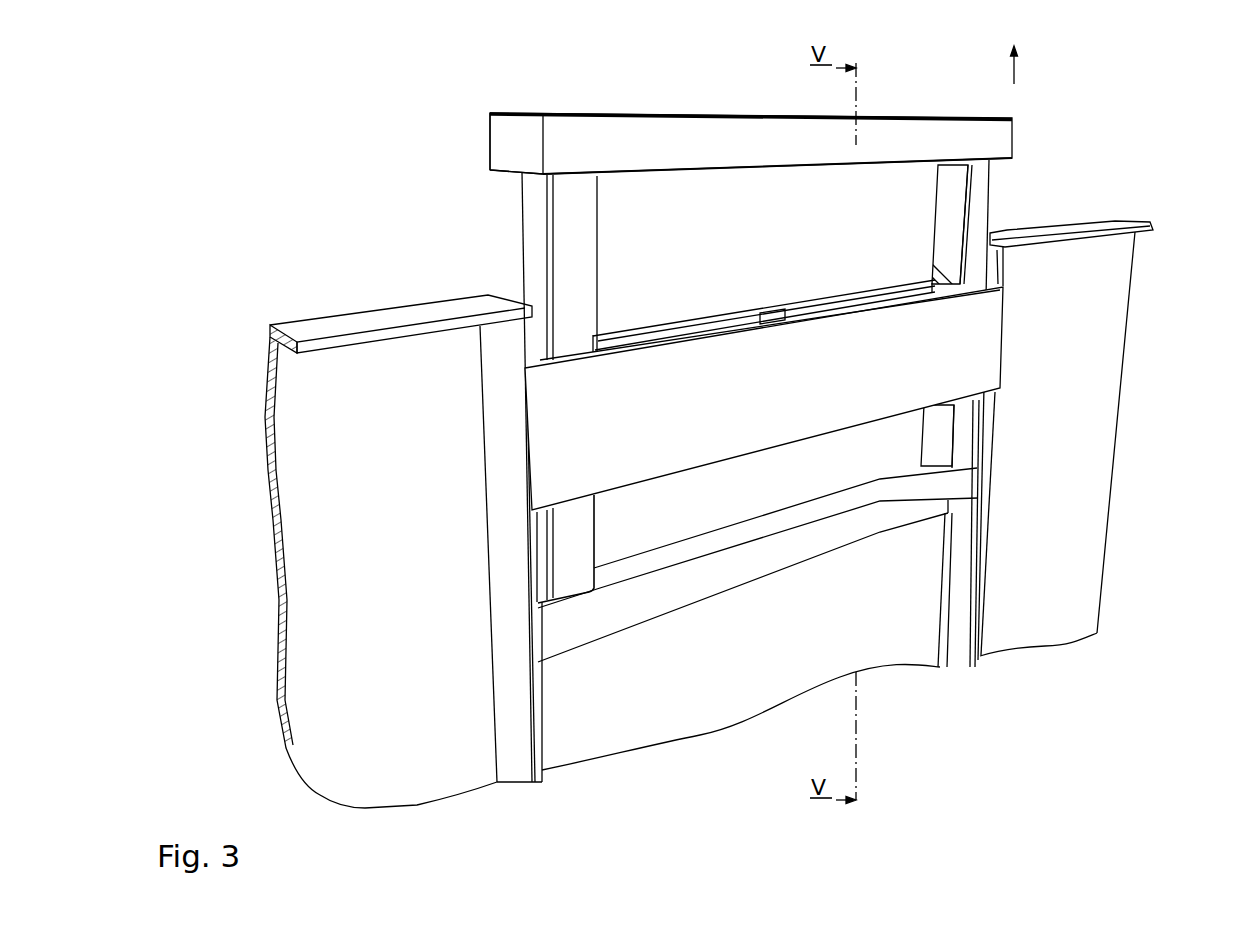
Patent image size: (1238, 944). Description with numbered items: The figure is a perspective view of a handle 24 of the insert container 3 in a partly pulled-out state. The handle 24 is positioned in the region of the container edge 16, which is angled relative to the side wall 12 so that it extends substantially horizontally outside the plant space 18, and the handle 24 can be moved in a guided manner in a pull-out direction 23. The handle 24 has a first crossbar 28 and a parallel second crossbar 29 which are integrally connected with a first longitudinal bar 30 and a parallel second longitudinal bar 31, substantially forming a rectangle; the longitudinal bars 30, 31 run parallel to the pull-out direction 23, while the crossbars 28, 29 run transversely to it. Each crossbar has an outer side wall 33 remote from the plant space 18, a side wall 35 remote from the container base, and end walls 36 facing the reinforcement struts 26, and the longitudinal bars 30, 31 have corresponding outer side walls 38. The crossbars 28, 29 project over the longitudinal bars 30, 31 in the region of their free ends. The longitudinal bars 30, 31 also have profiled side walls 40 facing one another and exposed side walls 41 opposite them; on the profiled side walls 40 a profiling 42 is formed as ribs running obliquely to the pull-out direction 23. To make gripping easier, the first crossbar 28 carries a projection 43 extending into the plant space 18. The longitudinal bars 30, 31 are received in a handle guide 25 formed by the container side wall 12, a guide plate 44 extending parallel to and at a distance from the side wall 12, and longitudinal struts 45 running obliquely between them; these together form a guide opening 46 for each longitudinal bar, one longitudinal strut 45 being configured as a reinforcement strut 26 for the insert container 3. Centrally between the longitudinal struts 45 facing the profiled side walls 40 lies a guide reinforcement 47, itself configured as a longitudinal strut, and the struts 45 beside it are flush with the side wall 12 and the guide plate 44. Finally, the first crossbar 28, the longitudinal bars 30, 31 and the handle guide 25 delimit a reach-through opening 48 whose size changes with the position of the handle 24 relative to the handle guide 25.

The insert container 3 is at (1156, 112).
The side wall 12 is at (1080, 450).
The edge 16 is at (1153, 227).
The plant space 18 is at (298, 301).
The pull-out direction 23 is at (1017, 66).
The handle 24 is at (784, 104).
The handle guide 25 is at (1000, 358).
The reinforcement strut 26 is at (522, 779).
The first crossbar 28 is at (560, 108).
The second crossbar 29 is at (558, 624).
The first longitudinal bar 30 is at (511, 232).
The second longitudinal bar 31 is at (1001, 177).
The outer side wall 33 is at (548, 137).
The side wall remote from the container base 35 is at (642, 567).
The end wall 36 is at (513, 142).
The outer side wall 38 is at (563, 207).
The profiled side wall 40 is at (958, 208).
The exposed side wall 41 is at (517, 273).
The profiling 42 is at (957, 165).
The projection 43 is at (493, 148).
The guide plate 44 is at (540, 416).
The longitudinal strut 45 is at (597, 350).
The guide opening 46 is at (518, 352).
The guide reinforcement 47 is at (771, 306).
The reach-through opening 48 is at (668, 224).